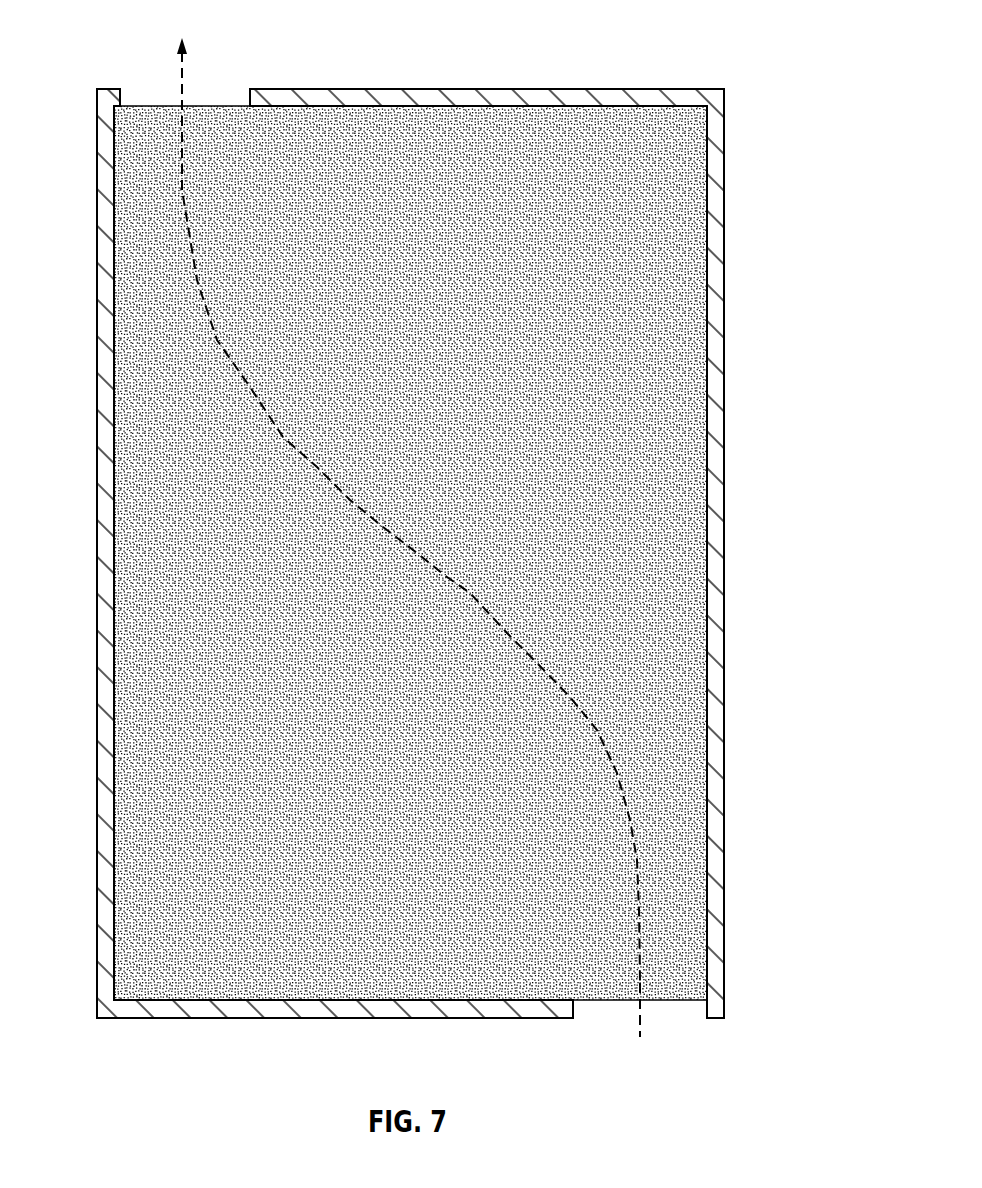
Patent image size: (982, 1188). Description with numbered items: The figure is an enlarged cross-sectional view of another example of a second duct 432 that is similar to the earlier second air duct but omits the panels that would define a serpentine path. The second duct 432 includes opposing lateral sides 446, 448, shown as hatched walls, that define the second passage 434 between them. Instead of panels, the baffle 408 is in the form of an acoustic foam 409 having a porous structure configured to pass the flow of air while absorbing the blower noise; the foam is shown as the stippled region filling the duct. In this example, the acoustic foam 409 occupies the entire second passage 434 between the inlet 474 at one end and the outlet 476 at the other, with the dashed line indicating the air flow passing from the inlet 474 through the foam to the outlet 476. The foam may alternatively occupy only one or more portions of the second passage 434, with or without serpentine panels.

The second duct 432 is at (726, 88).
The second passage 434 is at (706, 306).
The lateral side 446 is at (113, 642).
The lateral side 448 is at (706, 574).
The baffle 408 is at (640, 471).
The acoustic foam 409 is at (476, 553).
The inlet 474 is at (702, 1008).
The outlet 476 is at (250, 100).